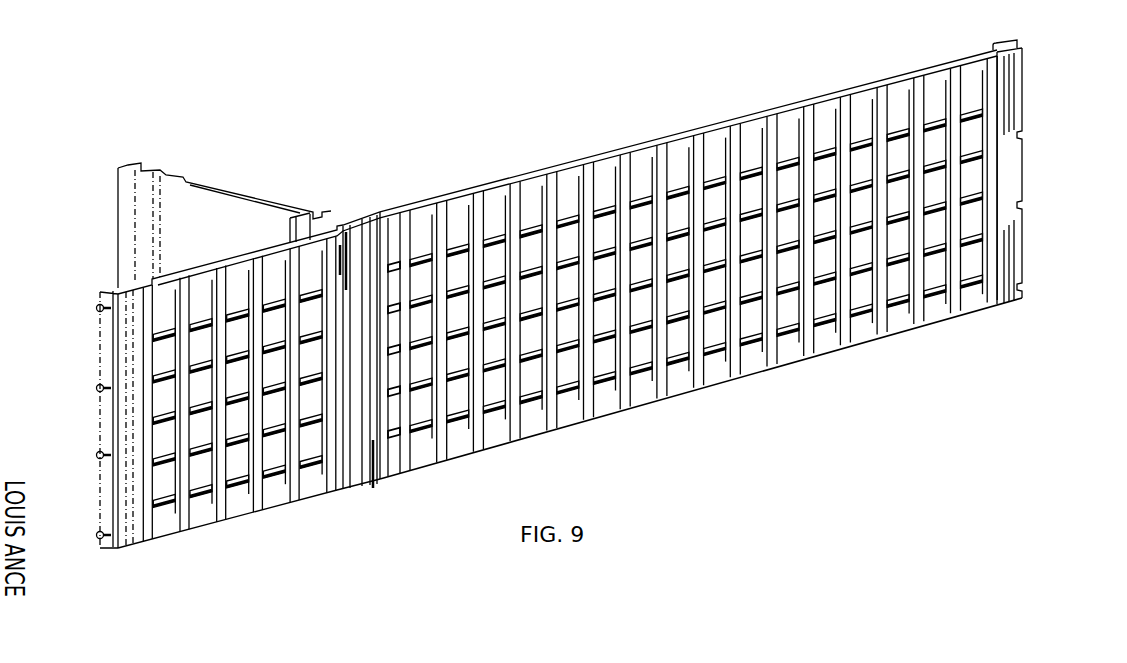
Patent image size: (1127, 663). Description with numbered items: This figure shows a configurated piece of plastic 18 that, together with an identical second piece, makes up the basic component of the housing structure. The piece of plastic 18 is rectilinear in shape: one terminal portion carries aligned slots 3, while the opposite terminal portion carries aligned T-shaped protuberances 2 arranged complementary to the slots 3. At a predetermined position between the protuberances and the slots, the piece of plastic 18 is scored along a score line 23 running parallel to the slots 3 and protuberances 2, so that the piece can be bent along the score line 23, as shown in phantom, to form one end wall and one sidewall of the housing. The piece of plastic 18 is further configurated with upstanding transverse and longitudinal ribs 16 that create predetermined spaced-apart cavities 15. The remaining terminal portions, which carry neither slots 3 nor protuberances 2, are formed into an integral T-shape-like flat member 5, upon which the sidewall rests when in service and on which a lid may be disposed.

The T-shaped protuberances 2 is at (93, 307).
The slots 3 is at (1020, 134).
The T-shape-like flat member 5 is at (195, 266).
The cavities 15 is at (568, 192).
The ribs 16 is at (628, 174).
The configurated piece of plastic 18 is at (701, 267).
The score line 23 is at (346, 228).